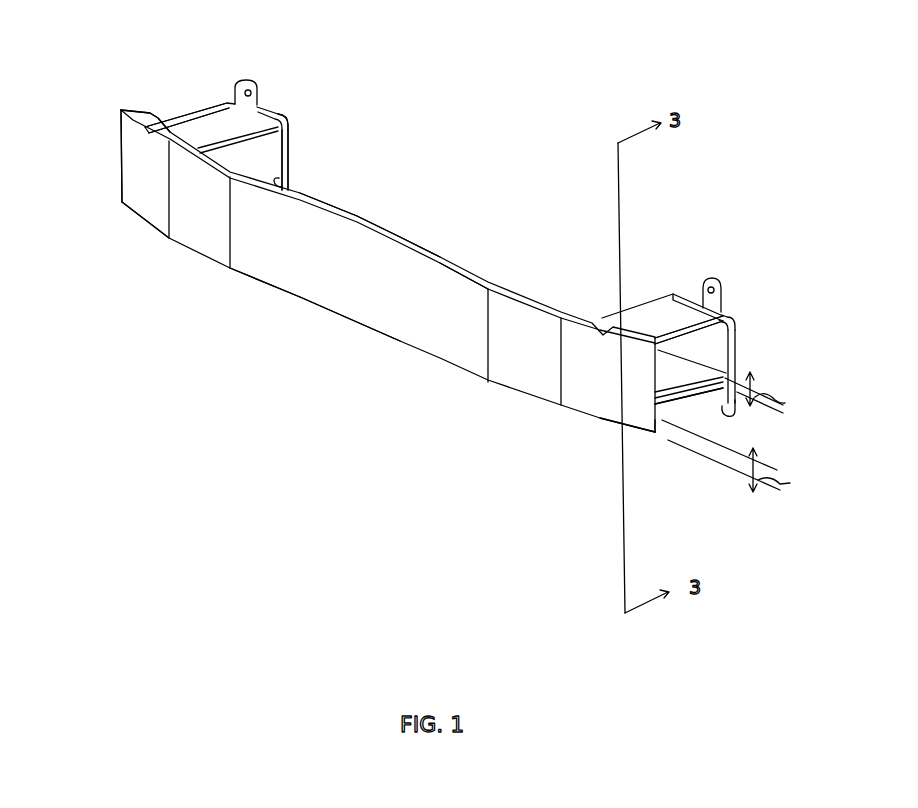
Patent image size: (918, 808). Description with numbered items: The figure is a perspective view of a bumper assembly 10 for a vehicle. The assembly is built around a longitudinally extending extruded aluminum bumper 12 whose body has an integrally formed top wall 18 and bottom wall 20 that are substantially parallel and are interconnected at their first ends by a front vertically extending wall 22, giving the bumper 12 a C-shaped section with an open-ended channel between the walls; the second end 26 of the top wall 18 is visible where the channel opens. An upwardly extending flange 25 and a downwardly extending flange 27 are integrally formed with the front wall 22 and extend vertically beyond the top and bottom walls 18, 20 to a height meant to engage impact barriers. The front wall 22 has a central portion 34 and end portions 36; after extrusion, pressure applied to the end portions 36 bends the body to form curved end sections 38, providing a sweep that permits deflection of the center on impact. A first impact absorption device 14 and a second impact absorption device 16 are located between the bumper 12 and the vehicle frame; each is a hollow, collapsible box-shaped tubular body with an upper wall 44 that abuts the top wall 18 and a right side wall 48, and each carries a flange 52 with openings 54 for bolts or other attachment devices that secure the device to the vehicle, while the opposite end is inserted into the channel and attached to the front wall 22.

The bumper assembly 10 is at (127, 456).
The longitudinally extending extruded aluminum bumper 12 is at (590, 422).
The first impact absorption device 14 is at (210, 85).
The second impact absorption device 16 is at (750, 325).
The top wall 18 is at (393, 242).
The bottom wall 20 is at (665, 428).
The front vertically extending wall 22 is at (400, 328).
The upwardly extending flange 25 is at (675, 320).
The second end of top wall 26 is at (480, 273).
The downwardly extending flange 27 is at (663, 437).
The central portion 34 is at (323, 295).
The end portions 36 is at (147, 208).
The curved end sections 38 is at (133, 102).
The upper wall 44 is at (238, 128).
The right side wall 48 is at (267, 165).
The flange 52 is at (280, 113).
The openings 54 is at (250, 93).